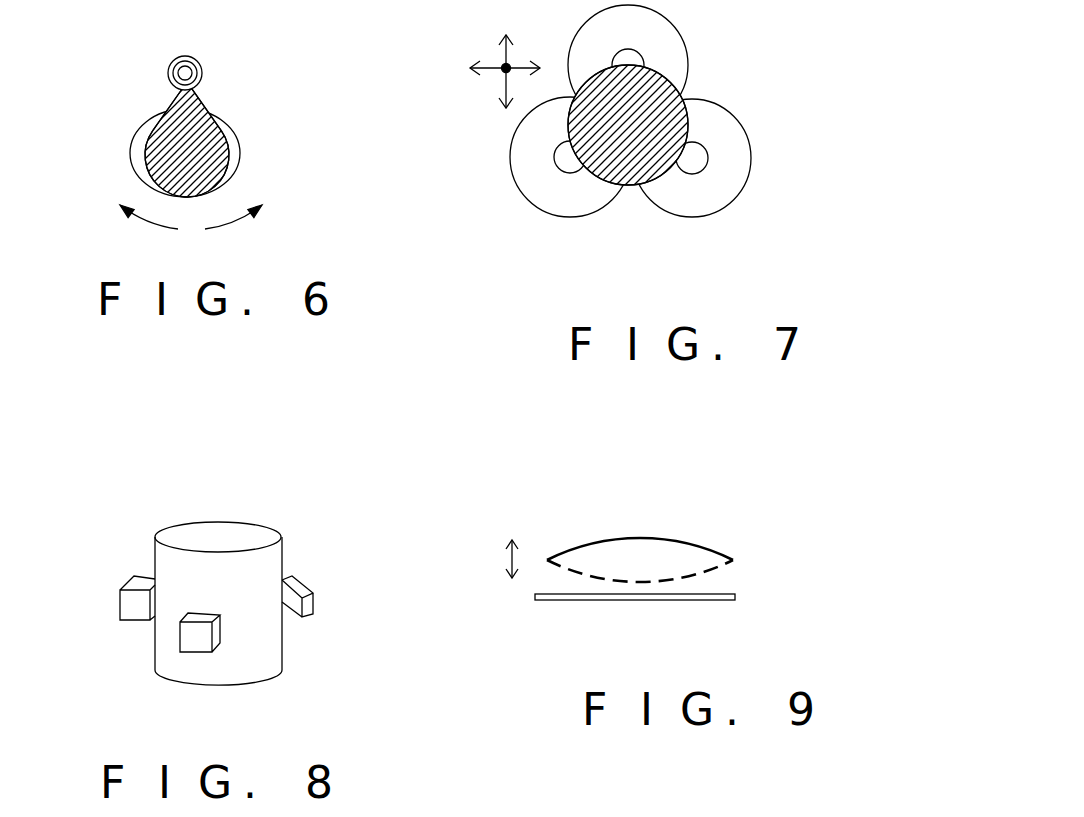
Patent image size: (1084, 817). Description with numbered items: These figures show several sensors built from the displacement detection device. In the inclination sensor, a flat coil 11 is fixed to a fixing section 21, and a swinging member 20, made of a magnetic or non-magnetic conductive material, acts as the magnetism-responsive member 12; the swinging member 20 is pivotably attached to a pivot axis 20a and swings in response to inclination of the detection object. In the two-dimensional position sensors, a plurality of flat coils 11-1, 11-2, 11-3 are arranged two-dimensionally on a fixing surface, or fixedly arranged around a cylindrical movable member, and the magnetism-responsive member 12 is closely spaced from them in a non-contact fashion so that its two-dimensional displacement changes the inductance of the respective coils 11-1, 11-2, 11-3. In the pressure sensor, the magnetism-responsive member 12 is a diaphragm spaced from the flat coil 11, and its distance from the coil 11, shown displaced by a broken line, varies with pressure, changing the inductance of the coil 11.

In FIG. 6, the fixing section 21 is at (107, 112).
In FIG. 6, the swinging member 20 is at (217, 140).
In FIG. 6, the pivot axis 20a is at (200, 62).
In FIG. 7, the coil 11-1 is at (667, 19).
In FIG. 8, the coil 11-1 is at (120, 600).
In FIG. 7, the coil 11-2 is at (708, 212).
In FIG. 8, the coil 11-2 is at (198, 652).
In FIG. 7, the coil 11-3 is at (572, 217).
In FIG. 8, the coil 11-3 is at (313, 595).
In FIG. 7, the magnetism-responsive member 12 is at (683, 97).
In FIG. 8, the magnetism-responsive member 12 is at (233, 522).
In FIG. 9, the magnetism-responsive member 12 is at (705, 545).
In FIG. 9, the coil 11 is at (687, 602).